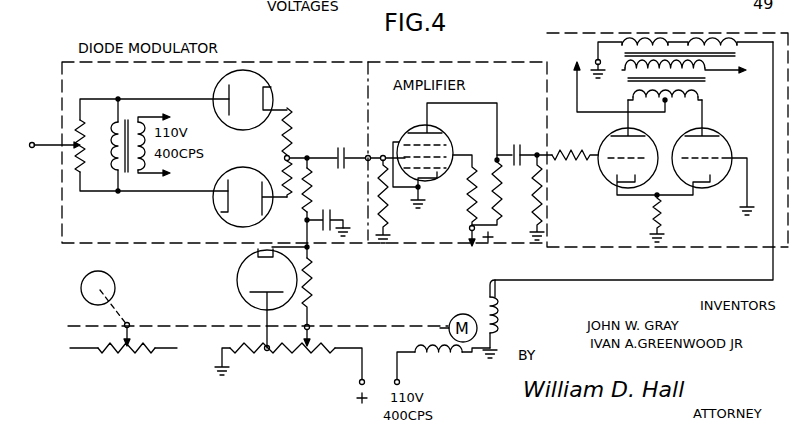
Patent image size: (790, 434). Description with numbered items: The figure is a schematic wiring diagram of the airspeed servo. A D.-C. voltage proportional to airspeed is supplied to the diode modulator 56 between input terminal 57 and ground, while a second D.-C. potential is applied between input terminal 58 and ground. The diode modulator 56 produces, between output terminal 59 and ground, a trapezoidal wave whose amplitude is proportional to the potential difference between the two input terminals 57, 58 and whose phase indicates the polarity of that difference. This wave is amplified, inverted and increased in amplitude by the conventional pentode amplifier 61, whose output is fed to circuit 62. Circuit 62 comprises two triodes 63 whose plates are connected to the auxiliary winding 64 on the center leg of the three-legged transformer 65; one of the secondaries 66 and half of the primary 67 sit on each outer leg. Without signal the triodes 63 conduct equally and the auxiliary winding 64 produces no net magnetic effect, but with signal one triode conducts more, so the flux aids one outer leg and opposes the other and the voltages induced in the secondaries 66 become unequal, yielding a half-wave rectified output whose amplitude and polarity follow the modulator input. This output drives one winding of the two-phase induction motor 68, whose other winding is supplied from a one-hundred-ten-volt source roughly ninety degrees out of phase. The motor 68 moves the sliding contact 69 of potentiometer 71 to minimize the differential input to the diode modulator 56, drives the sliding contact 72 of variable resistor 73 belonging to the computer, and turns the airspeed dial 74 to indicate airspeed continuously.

The diode modulator 56 is at (258, 161).
The input terminal 57 is at (40, 150).
The input terminal 58 is at (312, 250).
The output terminal 59 is at (365, 155).
The pentode amplifier 61 is at (523, 136).
The circuit 62 is at (676, 171).
The triodes 63 is at (682, 186).
The auxiliary winding 64 is at (660, 108).
The transformer 65 is at (666, 74).
The secondaries 66 is at (713, 36).
The primary 67 is at (623, 71).
The two-phase induction motor 68 is at (504, 315).
The sliding contact 69 is at (312, 330).
The potentiometer 71 is at (308, 353).
The sliding contact 72 is at (132, 328).
The variable resistor 73 is at (137, 353).
The airspeed dial 74 is at (115, 284).